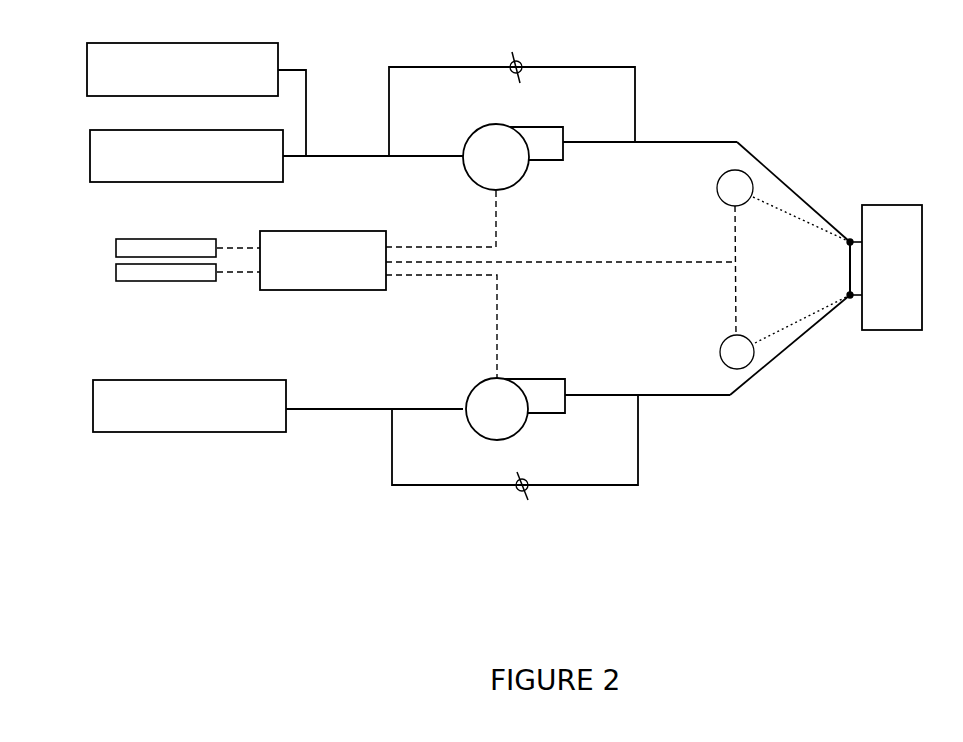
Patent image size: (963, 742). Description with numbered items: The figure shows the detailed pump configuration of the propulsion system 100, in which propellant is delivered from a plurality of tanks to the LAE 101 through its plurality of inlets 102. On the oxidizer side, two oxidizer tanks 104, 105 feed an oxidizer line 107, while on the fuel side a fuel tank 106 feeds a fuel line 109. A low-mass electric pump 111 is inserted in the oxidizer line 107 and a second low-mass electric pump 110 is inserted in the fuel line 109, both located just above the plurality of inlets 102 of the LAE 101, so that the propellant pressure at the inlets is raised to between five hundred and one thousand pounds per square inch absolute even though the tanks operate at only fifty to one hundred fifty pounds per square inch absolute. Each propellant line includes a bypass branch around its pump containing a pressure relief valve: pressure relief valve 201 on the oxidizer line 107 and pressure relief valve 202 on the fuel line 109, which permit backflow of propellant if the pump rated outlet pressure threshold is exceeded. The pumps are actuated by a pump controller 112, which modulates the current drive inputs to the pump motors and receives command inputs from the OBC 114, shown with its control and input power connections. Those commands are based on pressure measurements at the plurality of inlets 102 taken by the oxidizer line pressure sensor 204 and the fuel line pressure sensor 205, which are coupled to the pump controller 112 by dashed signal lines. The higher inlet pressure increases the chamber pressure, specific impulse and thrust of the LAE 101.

The propulsion system 100 is at (220, 614).
The LAE 101 is at (890, 331).
The plurality of inlets 102 is at (848, 264).
The oxidizer tank 104 is at (90, 154).
The oxidizer tank 105 is at (88, 66).
The fuel tank 106 is at (92, 408).
The oxidizer line 107 is at (350, 155).
The fuel line 109 is at (424, 408).
The low-mass electric pump 110 is at (527, 374).
The low-mass electric pump 111 is at (514, 187).
The pump controller 112 is at (325, 291).
The OBC 114 is at (178, 233).
The pressure relief valve 201 is at (520, 57).
The pressure relief valve 202 is at (527, 492).
The oxidizer line pressure sensor 204 is at (718, 188).
The fuel line pressure sensor 205 is at (720, 354).